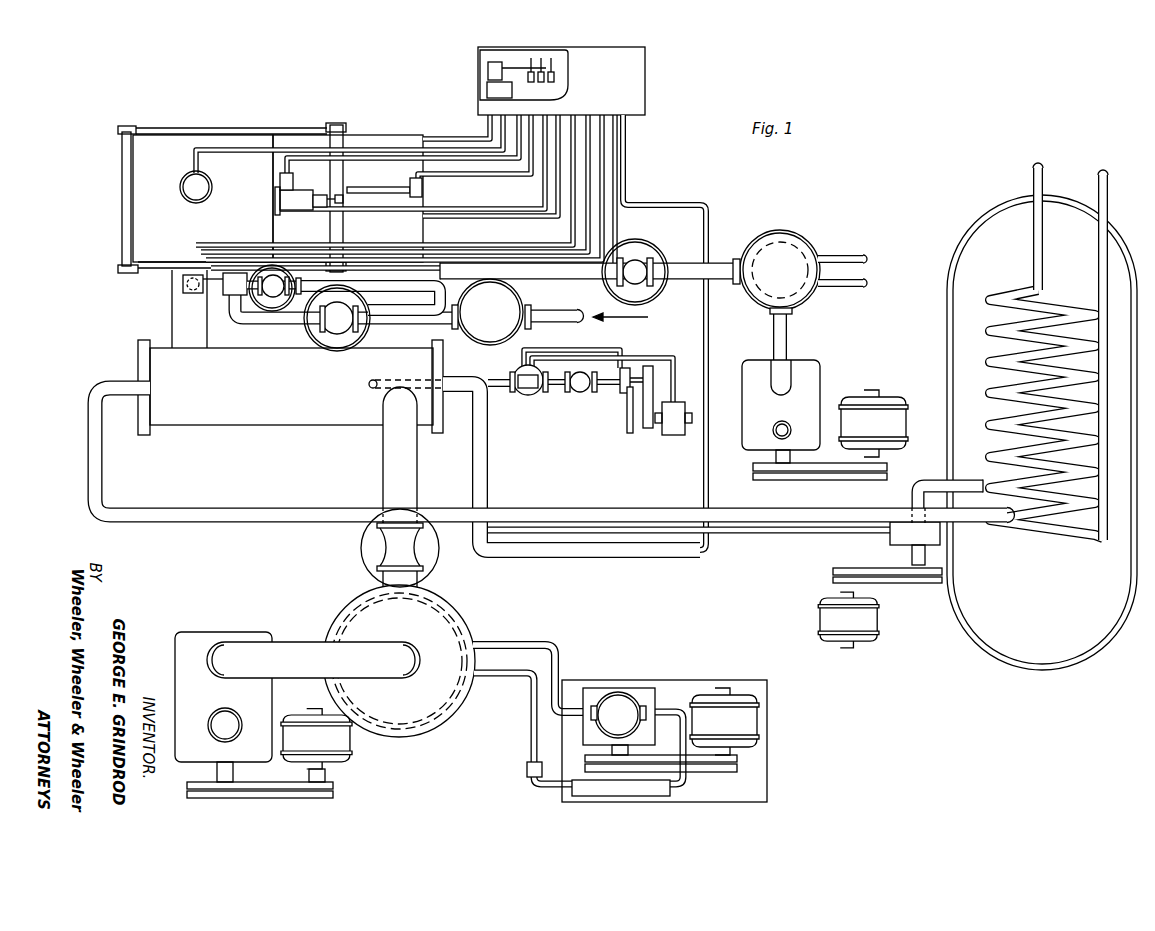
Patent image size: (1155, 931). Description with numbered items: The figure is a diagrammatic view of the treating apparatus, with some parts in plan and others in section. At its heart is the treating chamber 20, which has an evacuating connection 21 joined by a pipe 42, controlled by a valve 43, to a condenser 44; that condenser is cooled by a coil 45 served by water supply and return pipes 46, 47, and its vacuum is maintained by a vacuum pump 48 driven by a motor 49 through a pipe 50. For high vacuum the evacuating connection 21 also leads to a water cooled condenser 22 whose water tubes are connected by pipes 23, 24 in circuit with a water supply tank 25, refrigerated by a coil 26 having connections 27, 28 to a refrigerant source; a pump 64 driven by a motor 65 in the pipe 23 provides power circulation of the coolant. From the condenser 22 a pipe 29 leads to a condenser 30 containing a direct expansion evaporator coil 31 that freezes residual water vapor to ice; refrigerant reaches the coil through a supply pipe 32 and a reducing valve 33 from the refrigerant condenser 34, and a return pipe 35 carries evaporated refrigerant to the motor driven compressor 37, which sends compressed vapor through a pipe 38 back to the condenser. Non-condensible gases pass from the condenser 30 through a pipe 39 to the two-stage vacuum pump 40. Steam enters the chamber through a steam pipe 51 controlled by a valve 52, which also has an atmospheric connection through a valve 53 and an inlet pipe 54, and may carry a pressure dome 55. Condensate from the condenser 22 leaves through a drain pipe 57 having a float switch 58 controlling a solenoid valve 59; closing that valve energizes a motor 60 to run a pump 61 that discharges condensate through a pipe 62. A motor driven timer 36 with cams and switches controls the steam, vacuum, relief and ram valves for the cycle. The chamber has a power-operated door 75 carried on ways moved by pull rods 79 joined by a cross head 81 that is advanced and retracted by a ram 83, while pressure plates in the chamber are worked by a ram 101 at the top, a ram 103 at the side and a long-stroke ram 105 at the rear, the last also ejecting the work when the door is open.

The treating chamber 20 is at (155, 162).
The evacuating connection 21 is at (186, 313).
The water cooled condenser 22 is at (250, 405).
The pipe 23 is at (489, 475).
The pipe 24 is at (118, 386).
The water supply tank 25 is at (967, 325).
The coil 26 is at (1053, 317).
The connection 27 is at (1043, 198).
The connection 28 is at (1108, 206).
The pipe 29 is at (405, 494).
The condenser 30 is at (430, 640).
The evaporator coil 31 is at (462, 708).
The supply pipe 32 is at (530, 752).
The reducing valve 33 is at (529, 779).
The refrigerant condenser 34 is at (633, 790).
The return pipe 35 is at (519, 643).
The motor driven timer 36 is at (608, 88).
The motor driven compressor 37 is at (612, 705).
The pipe 38 is at (683, 780).
The pipe 39 is at (293, 655).
The two-stage vacuum pump 40 is at (187, 640).
The pipe 42 is at (213, 297).
The valve 43 is at (640, 265).
The condenser 44 is at (812, 248).
The coil 45 is at (805, 291).
The water supply pipe 46 is at (848, 256).
The water return pipe 47 is at (850, 287).
The vacuum pump 48 is at (812, 374).
The motor 49 is at (887, 412).
The pipe 50 is at (783, 340).
The steam pipe 51 is at (418, 321).
The valve 52 is at (325, 331).
The valve 53 is at (270, 292).
The inlet pipe 54 is at (297, 291).
The pressure dome 55 is at (498, 306).
The drain pipe 57 is at (499, 392).
The float switch 58 is at (530, 396).
The solenoid valve 59 is at (580, 395).
The motor 60 is at (676, 404).
The pump 61 is at (632, 367).
The pipe 62 is at (625, 422).
The pump 64 is at (907, 537).
The motor 65 is at (867, 621).
The door 75 is at (120, 210).
The pull rods 79 is at (228, 127).
The cross head 81 is at (338, 148).
The ram 83 is at (283, 201).
The ram 101 is at (192, 201).
The ram 103 is at (180, 274).
The ram 105 is at (375, 195).